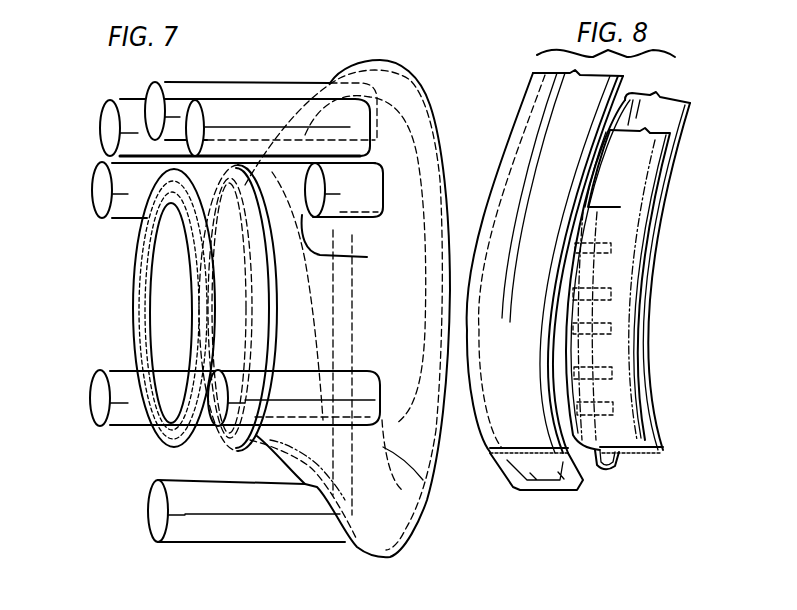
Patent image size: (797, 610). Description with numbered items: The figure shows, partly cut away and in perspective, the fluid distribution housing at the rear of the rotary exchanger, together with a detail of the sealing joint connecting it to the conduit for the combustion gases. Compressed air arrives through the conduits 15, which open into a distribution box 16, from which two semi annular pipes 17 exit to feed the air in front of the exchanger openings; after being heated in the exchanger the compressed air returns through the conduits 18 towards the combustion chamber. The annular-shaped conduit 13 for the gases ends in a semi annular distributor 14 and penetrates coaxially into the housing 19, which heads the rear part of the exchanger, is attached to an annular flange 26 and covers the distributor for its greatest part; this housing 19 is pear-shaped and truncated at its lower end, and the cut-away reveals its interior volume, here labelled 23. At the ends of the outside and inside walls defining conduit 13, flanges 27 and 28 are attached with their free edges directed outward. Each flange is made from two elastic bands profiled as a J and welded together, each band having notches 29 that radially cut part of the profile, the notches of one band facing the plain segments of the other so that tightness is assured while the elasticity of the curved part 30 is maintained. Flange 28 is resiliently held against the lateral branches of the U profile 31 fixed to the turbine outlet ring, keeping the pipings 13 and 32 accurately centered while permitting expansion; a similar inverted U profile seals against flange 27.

In FIG. 7, the conduit 13 is at (148, 192).
In FIG. 7, the semi annular distributor 14 is at (403, 470).
In FIG. 7, the conduits 15 is at (210, 113).
In FIG. 7, the distribution box 16 is at (367, 257).
In FIG. 7, the semi annular pipes 17 is at (392, 68).
In FIG. 7, the conduits 18 is at (355, 178).
In FIG. 7, the housing 19 is at (420, 528).
In FIG. 7, the cavity 23 is at (400, 160).
In FIG. 7, the annular flange 26 is at (267, 323).
In FIG. 7, the flange 27 is at (133, 331).
In FIG. 8, the flange 27 is at (648, 295).
In FIG. 7, the flange 28 is at (134, 352).
In FIG. 8, the notches 29 is at (613, 205).
In FIG. 8, the curved part 30 is at (596, 472).
In FIG. 8, the U profile 31 is at (555, 478).
In FIG. 8, the piping 32 is at (494, 463).